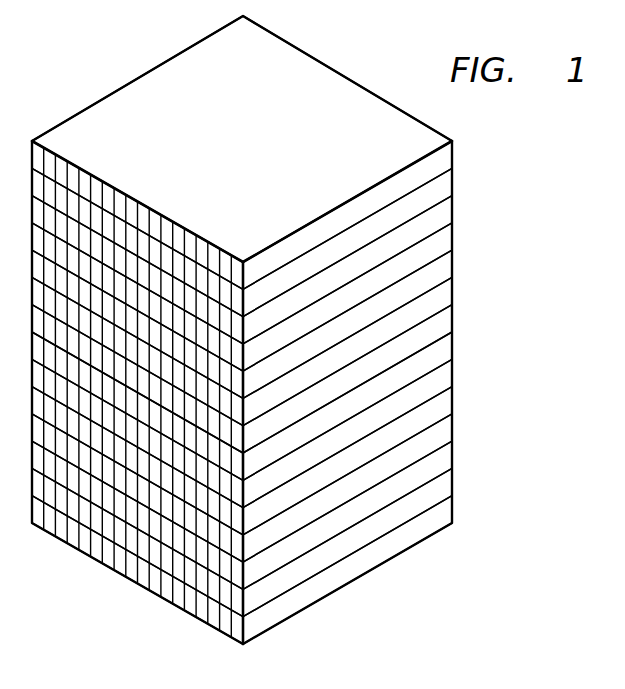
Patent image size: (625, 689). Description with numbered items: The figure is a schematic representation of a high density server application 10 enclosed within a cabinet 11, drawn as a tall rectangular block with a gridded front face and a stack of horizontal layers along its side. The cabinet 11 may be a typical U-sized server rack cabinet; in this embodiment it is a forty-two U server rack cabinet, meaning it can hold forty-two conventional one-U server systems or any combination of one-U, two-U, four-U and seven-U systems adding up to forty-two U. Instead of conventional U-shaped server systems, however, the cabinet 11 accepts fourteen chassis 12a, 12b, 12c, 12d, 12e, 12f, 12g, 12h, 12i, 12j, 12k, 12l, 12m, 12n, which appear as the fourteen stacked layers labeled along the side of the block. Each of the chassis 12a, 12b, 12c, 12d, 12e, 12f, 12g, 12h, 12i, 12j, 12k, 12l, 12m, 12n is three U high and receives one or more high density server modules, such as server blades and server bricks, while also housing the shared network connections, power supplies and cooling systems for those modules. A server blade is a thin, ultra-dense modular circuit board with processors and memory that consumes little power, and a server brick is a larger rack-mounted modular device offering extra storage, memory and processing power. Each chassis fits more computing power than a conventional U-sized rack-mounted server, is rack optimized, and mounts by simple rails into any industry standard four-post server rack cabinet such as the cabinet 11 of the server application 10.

The high density server application 10 is at (75, 61).
The cabinet 11 is at (330, 82).
The chassis 12a is at (452, 155).
The chassis 12b is at (452, 182).
The chassis 12c is at (452, 209).
The chassis 12d is at (452, 236).
The chassis 12e is at (452, 264).
The chassis 12f is at (452, 291).
The chassis 12g is at (452, 318).
The chassis 12h is at (452, 346).
The chassis 12i is at (452, 373).
The chassis 12j is at (452, 400).
The chassis 12k is at (452, 428).
The chassis 12l is at (452, 455).
The chassis 12m is at (452, 482).
The chassis 12n is at (452, 509).